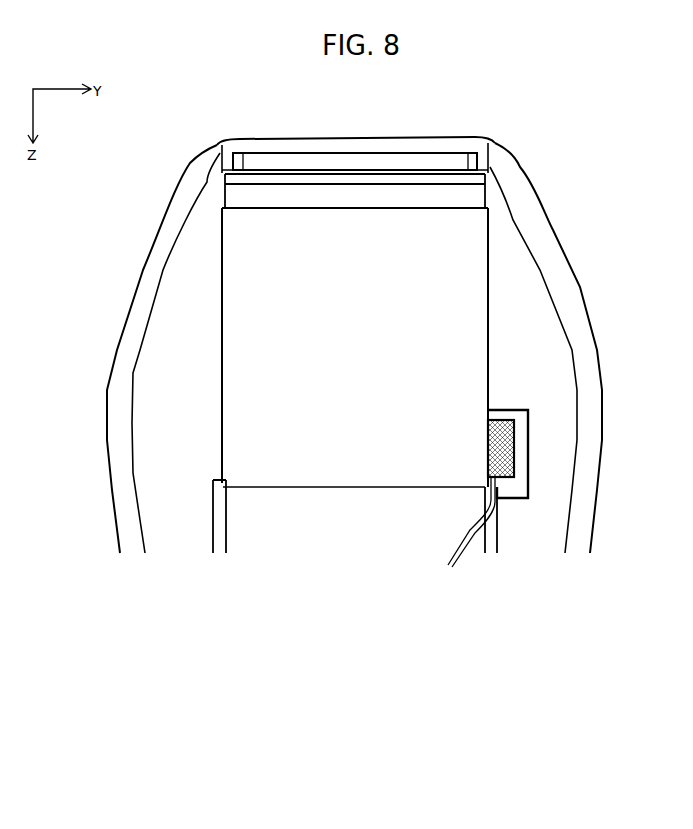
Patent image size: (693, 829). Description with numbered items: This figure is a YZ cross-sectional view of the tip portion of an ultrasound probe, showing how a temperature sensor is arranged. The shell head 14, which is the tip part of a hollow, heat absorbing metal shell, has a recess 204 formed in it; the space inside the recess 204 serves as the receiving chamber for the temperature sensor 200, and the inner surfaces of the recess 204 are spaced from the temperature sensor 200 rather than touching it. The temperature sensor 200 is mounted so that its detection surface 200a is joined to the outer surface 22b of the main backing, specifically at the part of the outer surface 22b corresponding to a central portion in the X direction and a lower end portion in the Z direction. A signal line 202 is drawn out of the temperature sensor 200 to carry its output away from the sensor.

The shell head 14 is at (557, 308).
The outer surface of the main backing 22b is at (490, 283).
The temperature sensor 200 is at (514, 447).
The detection surface 200a is at (488, 443).
The signal line 202 is at (450, 548).
The recess 204 is at (528, 437).